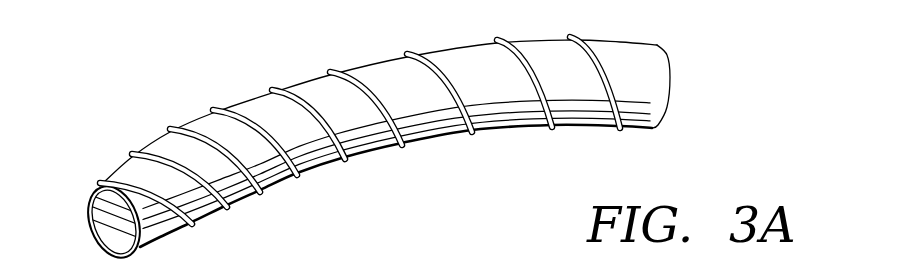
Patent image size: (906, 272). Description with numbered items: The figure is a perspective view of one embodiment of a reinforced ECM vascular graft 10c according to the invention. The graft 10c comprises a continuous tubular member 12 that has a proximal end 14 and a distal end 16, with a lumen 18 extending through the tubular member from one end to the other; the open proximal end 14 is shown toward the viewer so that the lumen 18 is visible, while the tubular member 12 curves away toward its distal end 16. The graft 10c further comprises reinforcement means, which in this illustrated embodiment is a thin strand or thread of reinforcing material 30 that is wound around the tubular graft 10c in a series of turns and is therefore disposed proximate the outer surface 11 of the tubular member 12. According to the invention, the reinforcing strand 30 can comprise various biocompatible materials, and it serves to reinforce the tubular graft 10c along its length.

The graft 10c is at (371, 134).
The outer surface 11 is at (370, 155).
The tubular member 12 is at (247, 107).
The proximal end 14 is at (97, 187).
The distal end 16 is at (640, 43).
The lumen 18 is at (118, 235).
The reinforcing strand 30 is at (566, 38).